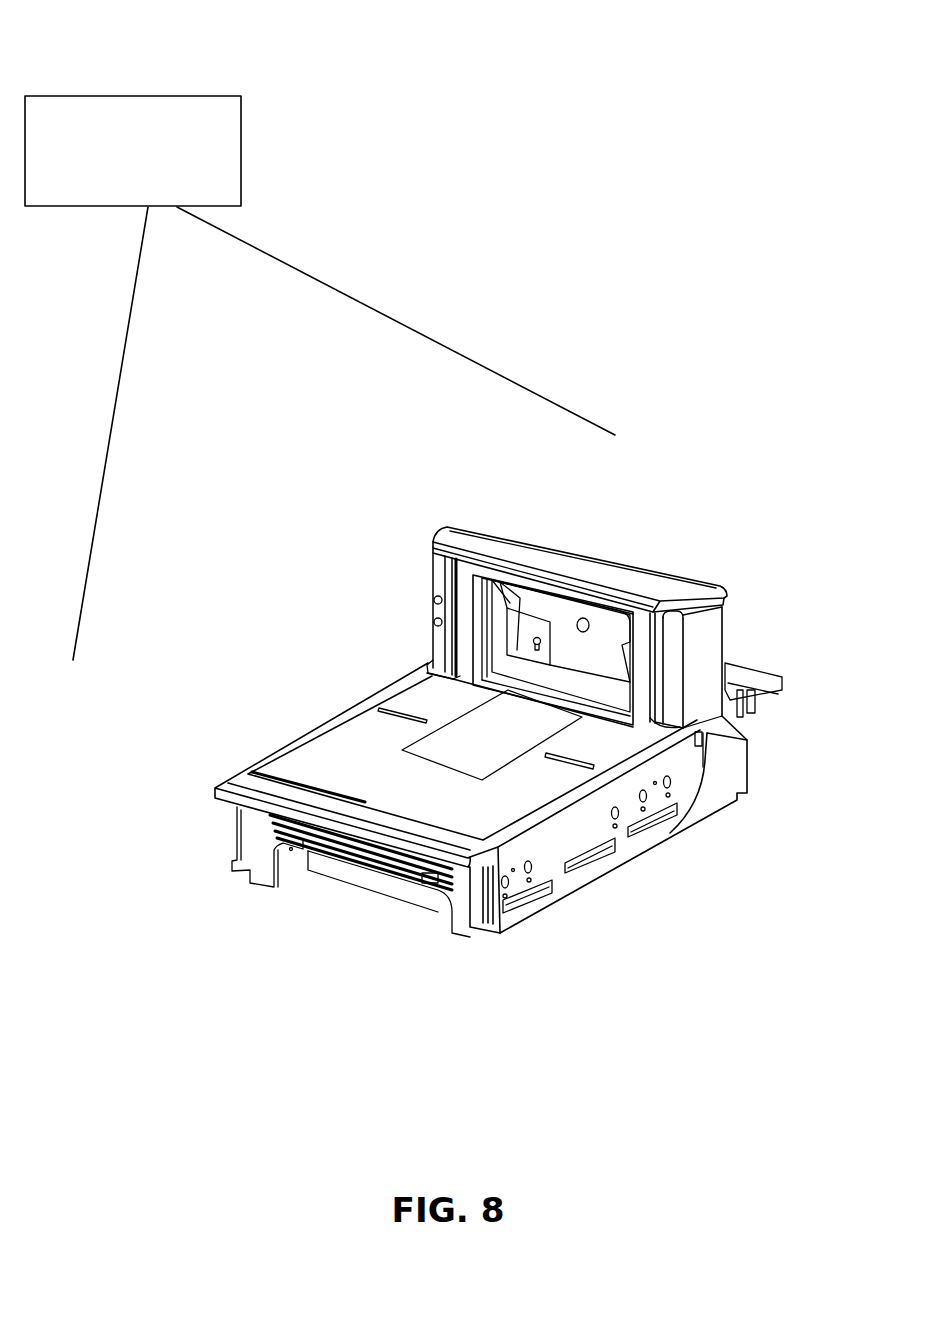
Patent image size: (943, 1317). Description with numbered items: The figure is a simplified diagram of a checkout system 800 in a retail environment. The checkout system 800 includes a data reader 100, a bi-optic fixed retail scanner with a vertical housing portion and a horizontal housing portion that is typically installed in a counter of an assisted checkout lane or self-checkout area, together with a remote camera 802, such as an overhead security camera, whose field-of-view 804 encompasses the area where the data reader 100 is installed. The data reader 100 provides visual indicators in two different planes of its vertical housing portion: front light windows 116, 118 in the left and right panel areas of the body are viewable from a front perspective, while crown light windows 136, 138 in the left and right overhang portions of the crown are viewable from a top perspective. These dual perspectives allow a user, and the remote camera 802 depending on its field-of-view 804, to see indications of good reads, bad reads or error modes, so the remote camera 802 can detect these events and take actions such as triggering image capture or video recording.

The remote camera 802 is at (103, 96).
The field-of-view 804 is at (331, 282).
The checkout system 800 is at (625, 238).
The data reader 100 is at (517, 699).
The crown light window 136 is at (462, 528).
The front light window 116 is at (433, 623).
The crown light window 138 is at (722, 592).
The front light window 118 is at (660, 688).